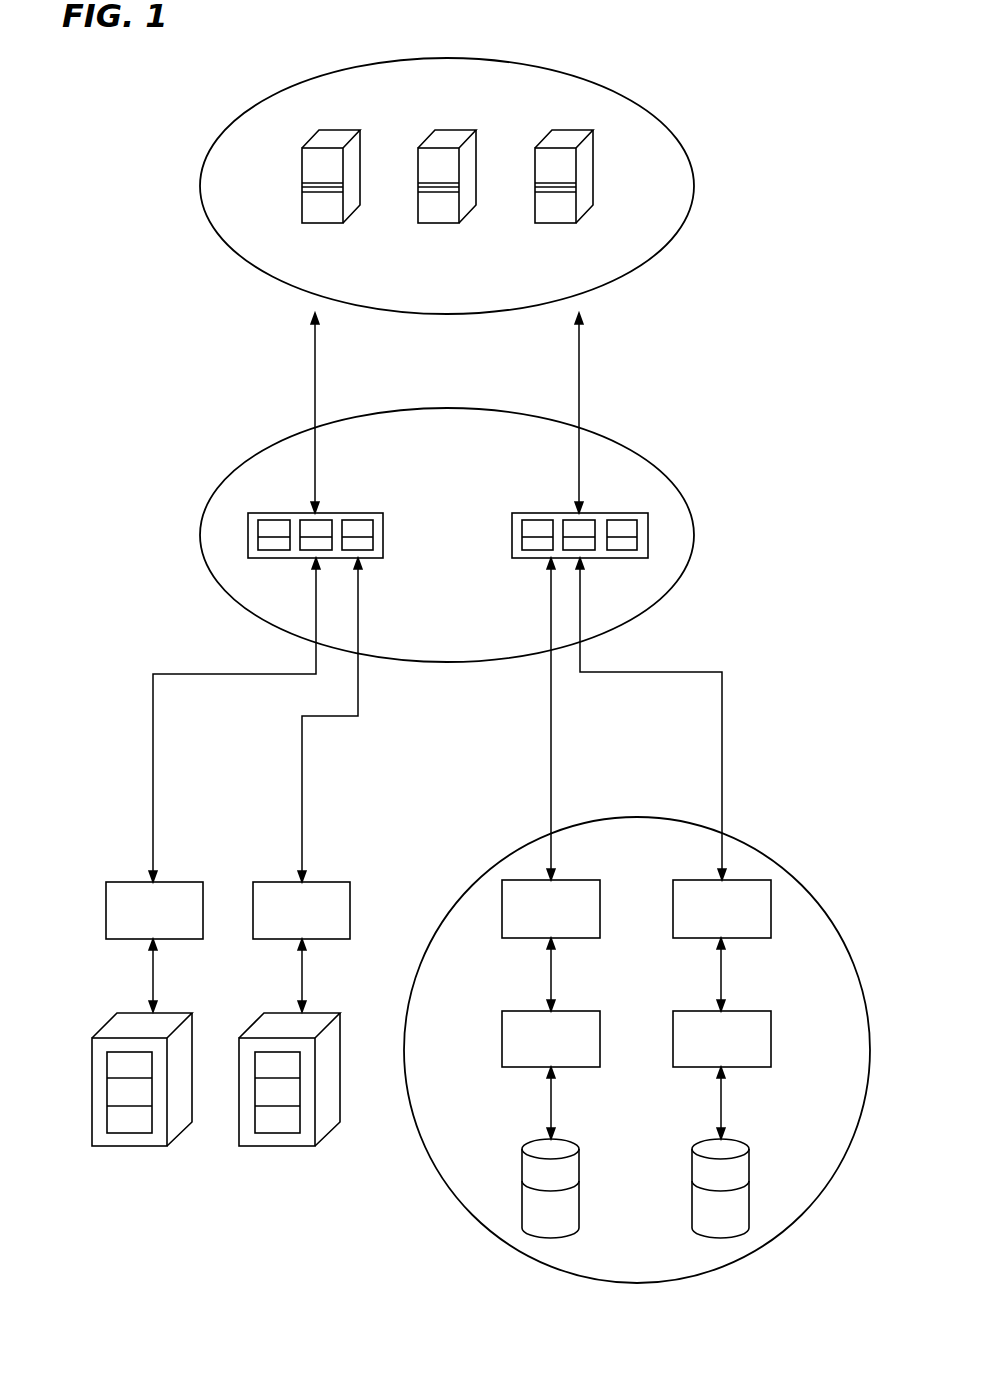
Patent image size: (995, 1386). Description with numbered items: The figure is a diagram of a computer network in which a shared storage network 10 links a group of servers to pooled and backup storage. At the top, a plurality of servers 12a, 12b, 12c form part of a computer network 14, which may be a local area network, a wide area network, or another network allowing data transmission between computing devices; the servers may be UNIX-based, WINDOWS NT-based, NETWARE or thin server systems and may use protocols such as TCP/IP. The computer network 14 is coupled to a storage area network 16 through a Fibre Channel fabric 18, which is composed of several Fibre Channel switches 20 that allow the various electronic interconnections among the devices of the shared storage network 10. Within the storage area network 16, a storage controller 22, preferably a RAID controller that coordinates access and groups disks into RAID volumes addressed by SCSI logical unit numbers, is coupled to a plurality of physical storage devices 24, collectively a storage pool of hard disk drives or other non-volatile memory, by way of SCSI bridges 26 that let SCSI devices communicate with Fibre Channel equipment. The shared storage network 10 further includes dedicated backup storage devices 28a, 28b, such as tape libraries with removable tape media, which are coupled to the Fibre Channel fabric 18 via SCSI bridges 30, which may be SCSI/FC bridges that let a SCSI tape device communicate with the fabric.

The shared storage network 10 is at (200, 118).
The server 12a is at (327, 223).
The server 12b is at (435, 223).
The server 12c is at (563, 223).
The computer network 14 is at (642, 106).
The storage area network 16 is at (785, 867).
The Fibre Channel fabric 18 is at (665, 473).
The Fibre Channel switch 20 is at (268, 558).
The storage controller 22 is at (519, 938).
The physical storage device 24 is at (529, 1226).
The SCSI bridge 26 is at (502, 1030).
The dedicated backup storage device 28a is at (143, 1146).
The dedicated backup storage device 28b is at (280, 1146).
The SCSI bridge 30 is at (106, 910).